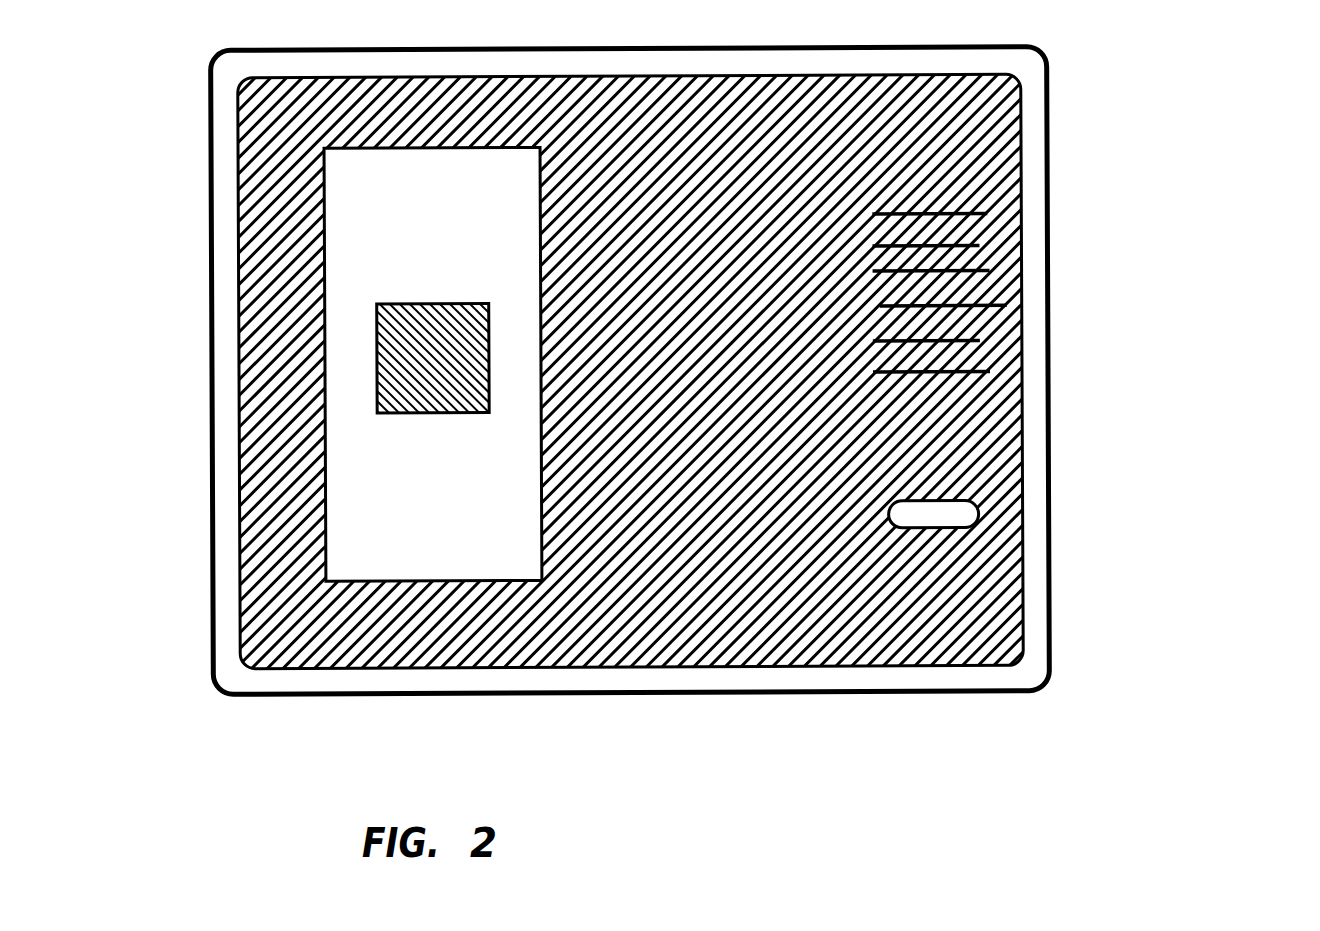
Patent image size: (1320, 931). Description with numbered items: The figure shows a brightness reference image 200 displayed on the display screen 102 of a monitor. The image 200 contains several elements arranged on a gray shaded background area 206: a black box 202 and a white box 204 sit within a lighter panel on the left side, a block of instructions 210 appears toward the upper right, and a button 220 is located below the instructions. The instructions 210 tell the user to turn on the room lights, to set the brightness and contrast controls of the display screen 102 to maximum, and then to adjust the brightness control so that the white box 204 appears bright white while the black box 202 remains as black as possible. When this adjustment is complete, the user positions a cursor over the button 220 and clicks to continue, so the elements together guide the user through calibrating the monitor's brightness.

The display screen 102 is at (943, 693).
The brightness reference image 200 is at (748, 667).
The black box 202 is at (455, 302).
The white box 204 is at (540, 457).
The gray shaded background area 206 is at (1000, 603).
The instructions 210 is at (978, 375).
The button 220 is at (978, 519).